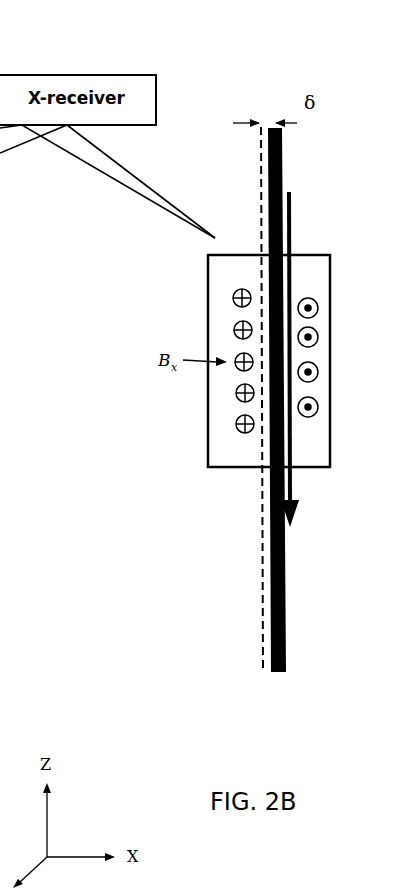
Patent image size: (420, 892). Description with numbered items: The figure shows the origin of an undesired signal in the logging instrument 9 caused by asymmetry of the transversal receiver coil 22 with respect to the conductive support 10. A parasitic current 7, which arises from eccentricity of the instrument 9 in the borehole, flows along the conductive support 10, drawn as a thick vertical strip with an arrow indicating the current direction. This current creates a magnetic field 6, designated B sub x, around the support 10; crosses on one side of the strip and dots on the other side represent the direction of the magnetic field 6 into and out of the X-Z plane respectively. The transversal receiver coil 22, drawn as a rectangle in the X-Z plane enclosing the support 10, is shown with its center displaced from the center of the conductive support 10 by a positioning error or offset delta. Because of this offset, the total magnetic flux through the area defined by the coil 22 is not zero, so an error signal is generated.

The magnetic field 6 is at (234, 391).
The parasitic current 7 is at (293, 483).
The logging instrument 9 is at (338, 137).
The conductive support 10 is at (272, 567).
The transversal receiver coil 22 is at (332, 457).